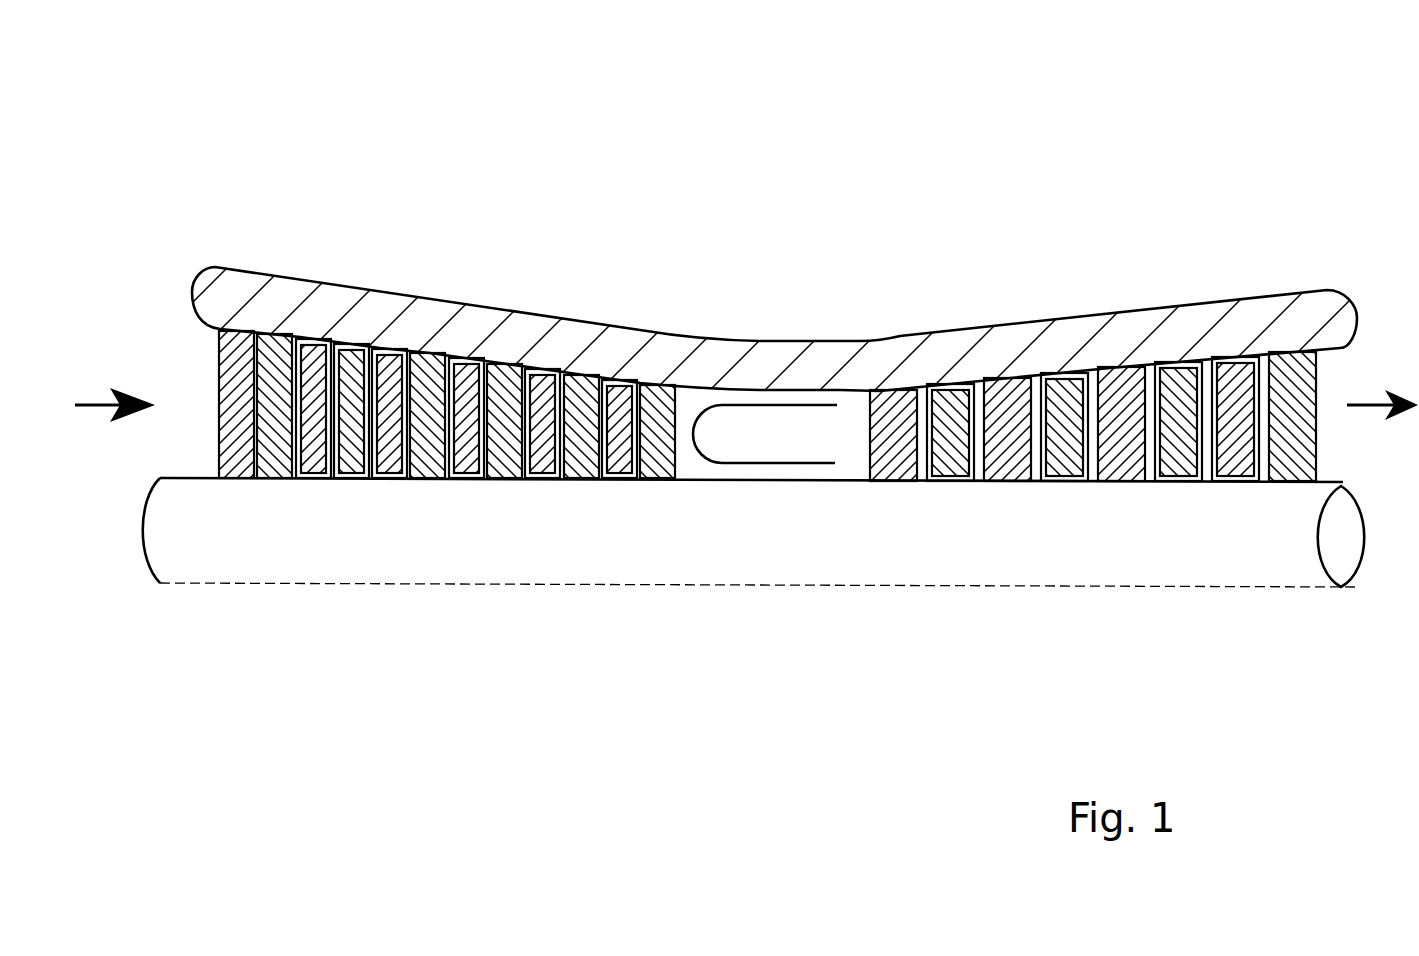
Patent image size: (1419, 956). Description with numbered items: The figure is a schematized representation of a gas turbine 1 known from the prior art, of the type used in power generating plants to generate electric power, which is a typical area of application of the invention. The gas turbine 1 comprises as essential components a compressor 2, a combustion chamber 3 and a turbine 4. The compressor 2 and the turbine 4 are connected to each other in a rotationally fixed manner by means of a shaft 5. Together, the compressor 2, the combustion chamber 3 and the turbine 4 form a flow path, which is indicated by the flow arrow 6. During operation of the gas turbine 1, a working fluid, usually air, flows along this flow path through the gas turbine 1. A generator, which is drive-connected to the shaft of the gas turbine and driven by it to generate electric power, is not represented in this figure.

The gas turbine 1 is at (672, 195).
The compressor 2 is at (430, 460).
The combustion chamber 3 is at (785, 462).
The turbine 4 is at (1063, 462).
The shaft 5 is at (553, 553).
The flow arrow 6 is at (97, 400).